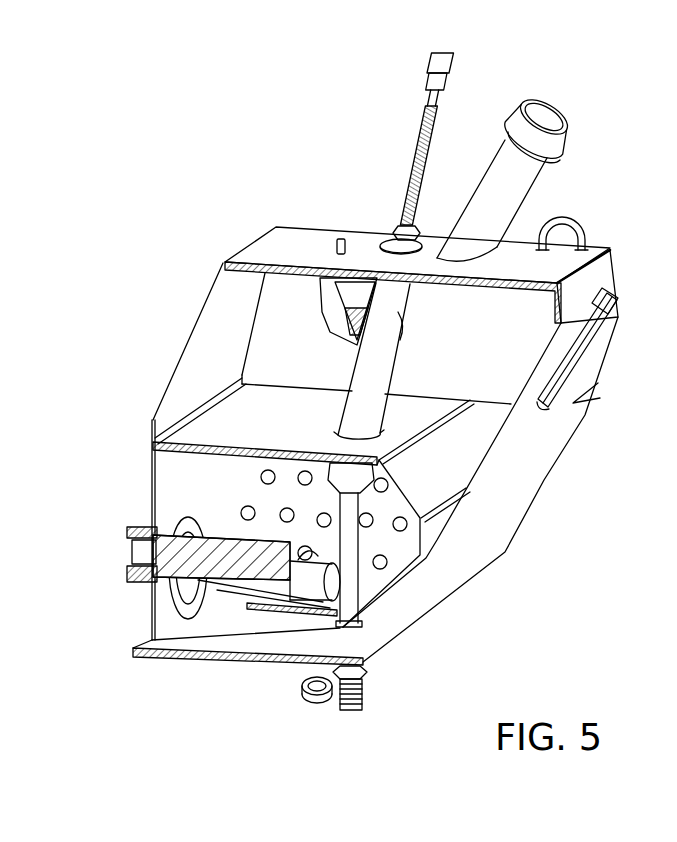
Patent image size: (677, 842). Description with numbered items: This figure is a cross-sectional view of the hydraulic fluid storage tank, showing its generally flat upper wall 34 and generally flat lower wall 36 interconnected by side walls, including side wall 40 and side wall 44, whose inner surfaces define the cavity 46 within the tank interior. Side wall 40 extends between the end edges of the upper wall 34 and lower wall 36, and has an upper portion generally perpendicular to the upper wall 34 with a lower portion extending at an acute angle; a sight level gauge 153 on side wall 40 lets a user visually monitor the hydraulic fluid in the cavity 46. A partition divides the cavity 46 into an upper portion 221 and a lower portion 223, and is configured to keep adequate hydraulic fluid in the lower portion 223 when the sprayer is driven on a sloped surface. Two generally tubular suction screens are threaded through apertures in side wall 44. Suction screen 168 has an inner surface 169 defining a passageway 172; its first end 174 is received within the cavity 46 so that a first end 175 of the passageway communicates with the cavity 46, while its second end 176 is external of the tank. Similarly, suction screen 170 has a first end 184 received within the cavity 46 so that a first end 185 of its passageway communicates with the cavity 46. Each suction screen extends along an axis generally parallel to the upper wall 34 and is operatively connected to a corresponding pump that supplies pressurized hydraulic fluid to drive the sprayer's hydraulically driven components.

The upper wall 34 is at (323, 240).
The lower wall 36 is at (280, 657).
The side wall 40 is at (547, 347).
The side wall 44 is at (178, 362).
The cavity 46 is at (273, 330).
The sight level gauge 153 is at (603, 326).
The suction screen 168 is at (147, 527).
The inner surface 169 is at (148, 545).
The suction screen 170 is at (258, 520).
The passageway 172 is at (207, 533).
The first end 174 is at (258, 520).
The first end of passageway 175 is at (220, 478).
The second end 176 is at (143, 590).
The first end 184 is at (297, 603).
The first end of passageway 185 is at (333, 580).
The upper portion 221 is at (487, 378).
The lower portion 223 is at (390, 537).